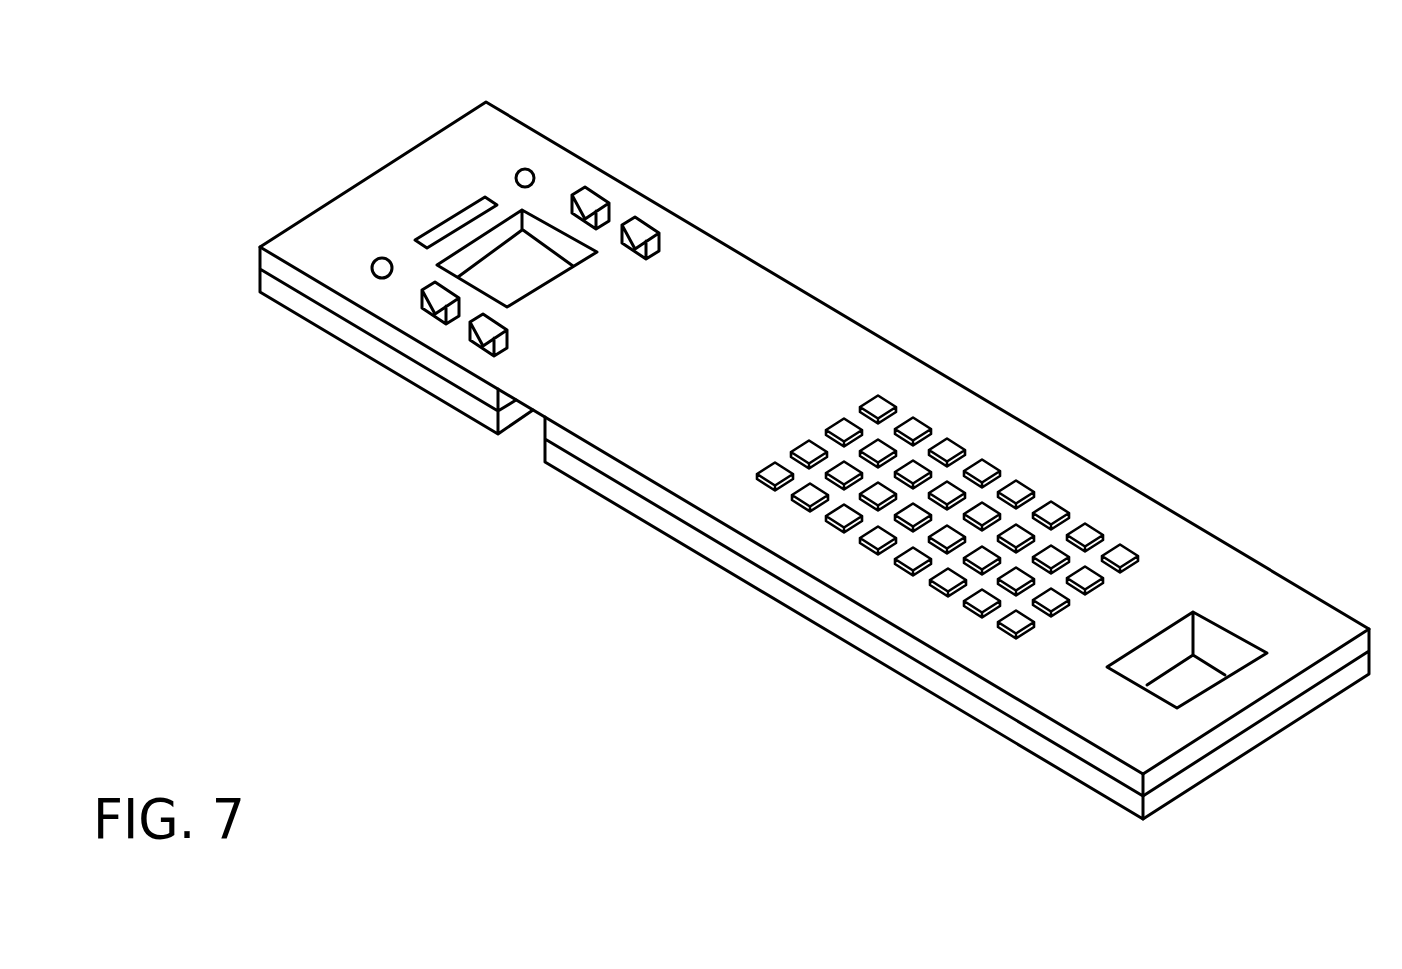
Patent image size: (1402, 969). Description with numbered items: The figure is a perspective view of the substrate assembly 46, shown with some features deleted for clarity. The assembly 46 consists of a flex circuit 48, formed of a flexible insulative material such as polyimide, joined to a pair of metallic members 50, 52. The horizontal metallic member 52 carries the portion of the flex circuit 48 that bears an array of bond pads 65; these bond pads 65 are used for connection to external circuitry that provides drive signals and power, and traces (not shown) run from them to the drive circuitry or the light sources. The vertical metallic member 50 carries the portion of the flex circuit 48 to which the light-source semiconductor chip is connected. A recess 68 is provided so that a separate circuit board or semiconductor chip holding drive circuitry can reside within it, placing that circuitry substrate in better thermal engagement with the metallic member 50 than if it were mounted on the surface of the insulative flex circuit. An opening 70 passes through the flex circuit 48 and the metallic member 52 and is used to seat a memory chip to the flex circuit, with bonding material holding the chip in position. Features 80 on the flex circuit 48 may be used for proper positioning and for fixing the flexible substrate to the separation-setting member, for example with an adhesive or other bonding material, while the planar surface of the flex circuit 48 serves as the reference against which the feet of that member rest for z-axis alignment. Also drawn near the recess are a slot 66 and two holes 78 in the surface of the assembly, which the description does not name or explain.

The substrate assembly 46 is at (588, 615).
The flex circuit 48 is at (1112, 720).
The vertical metallic member 50 is at (277, 290).
The horizontal metallic member 52 is at (840, 623).
The bond pads 65 is at (1053, 515).
The slot 66 is at (453, 223).
The recess 68 is at (525, 277).
The opening 70 is at (1193, 672).
The holes 78 is at (531, 170).
The features 80 is at (635, 227).